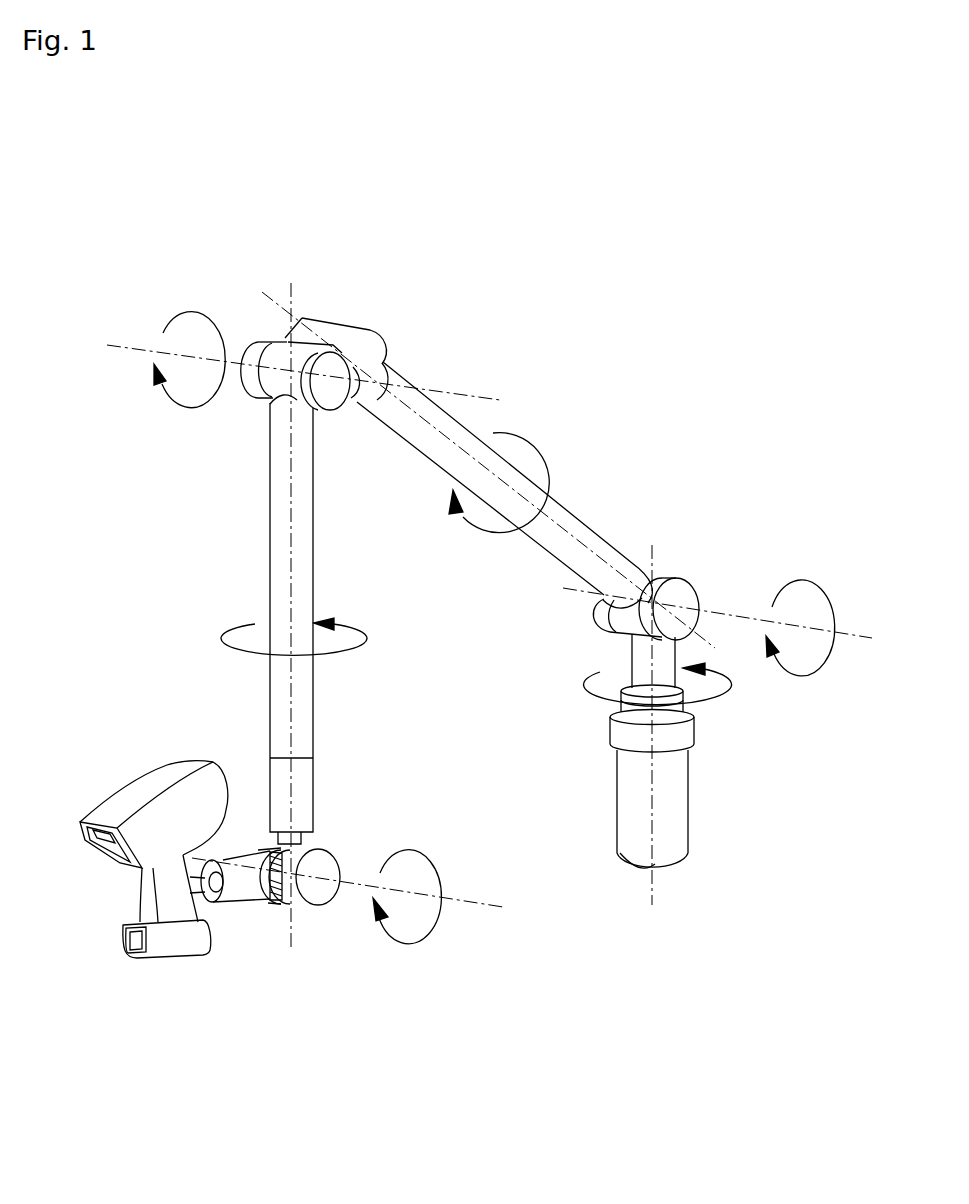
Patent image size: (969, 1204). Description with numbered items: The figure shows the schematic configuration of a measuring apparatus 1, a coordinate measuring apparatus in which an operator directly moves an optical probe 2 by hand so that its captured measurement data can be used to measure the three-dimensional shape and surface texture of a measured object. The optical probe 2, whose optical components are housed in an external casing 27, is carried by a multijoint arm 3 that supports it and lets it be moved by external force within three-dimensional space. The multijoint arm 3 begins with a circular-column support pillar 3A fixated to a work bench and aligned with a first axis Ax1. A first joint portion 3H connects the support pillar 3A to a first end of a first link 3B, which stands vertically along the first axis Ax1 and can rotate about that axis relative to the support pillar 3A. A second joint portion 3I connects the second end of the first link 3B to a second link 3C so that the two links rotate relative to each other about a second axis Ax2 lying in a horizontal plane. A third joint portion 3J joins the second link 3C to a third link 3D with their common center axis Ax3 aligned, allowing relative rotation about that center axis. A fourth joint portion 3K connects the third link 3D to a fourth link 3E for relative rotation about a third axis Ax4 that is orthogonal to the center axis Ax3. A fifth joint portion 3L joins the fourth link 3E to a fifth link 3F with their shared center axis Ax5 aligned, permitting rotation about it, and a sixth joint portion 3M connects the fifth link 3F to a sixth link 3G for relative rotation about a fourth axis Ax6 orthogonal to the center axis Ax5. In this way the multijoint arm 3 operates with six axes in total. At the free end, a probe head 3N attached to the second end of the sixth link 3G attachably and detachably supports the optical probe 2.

The measuring apparatus 1 is at (583, 970).
The optical probe 2 is at (137, 787).
The external casing 27 is at (177, 772).
The multijoint arm 3 is at (540, 325).
The support pillar 3A is at (688, 818).
The first link 3B is at (640, 653).
The second link 3C is at (657, 578).
The third link 3D is at (437, 417).
The fourth link 3E is at (300, 490).
The fifth link 3F is at (303, 788).
The sixth link 3G is at (275, 903).
The first joint portion 3H is at (705, 727).
The second joint portion 3I is at (693, 577).
The third joint portion 3J is at (590, 602).
The fourth joint portion 3K is at (320, 308).
The fifth joint portion 3L is at (327, 755).
The sixth joint portion 3M is at (348, 850).
The probe head 3N is at (248, 890).
The first axis Ax1 is at (655, 887).
The second axis Ax2 is at (862, 637).
The center axis Ax3 is at (552, 522).
The third axis Ax4 is at (130, 348).
The center axis Ax5 is at (292, 583).
The fourth axis Ax6 is at (463, 898).